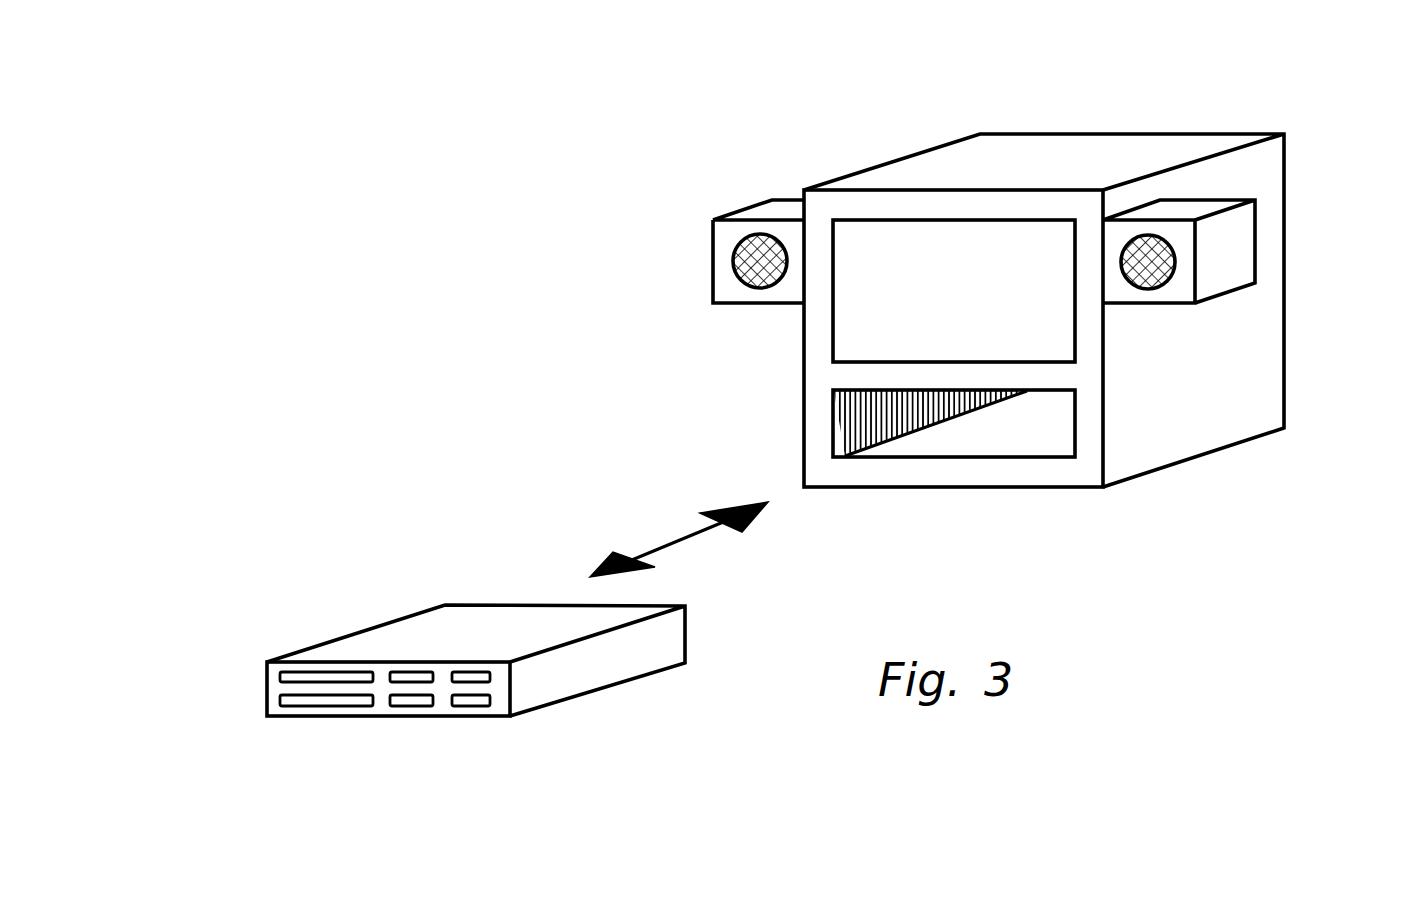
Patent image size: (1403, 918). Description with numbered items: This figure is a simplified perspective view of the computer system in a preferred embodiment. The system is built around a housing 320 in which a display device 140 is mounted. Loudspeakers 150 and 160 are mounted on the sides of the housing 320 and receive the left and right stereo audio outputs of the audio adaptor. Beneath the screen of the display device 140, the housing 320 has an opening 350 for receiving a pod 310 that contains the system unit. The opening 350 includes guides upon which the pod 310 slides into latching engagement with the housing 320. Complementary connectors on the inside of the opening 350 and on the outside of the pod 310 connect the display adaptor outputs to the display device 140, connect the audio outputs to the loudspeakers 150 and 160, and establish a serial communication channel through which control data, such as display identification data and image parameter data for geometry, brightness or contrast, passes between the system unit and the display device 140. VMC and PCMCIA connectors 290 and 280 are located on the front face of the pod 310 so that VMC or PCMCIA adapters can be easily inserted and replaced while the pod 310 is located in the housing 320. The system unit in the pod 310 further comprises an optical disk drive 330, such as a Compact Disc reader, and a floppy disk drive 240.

The display device 140 is at (877, 220).
The loudspeaker 150 is at (1237, 247).
The loudspeaker 160 is at (723, 282).
The housing 320 is at (1238, 388).
The opening 350 is at (980, 432).
The pod 310 is at (492, 627).
The optical disk drive 330 is at (280, 677).
The floppy disk drive 240 is at (280, 697).
The VMC connector 290 is at (458, 672).
The PCMCIA connector 280 is at (458, 706).